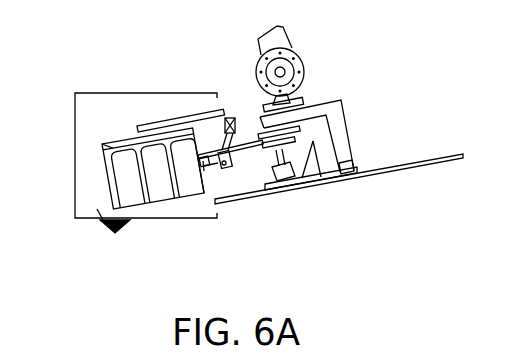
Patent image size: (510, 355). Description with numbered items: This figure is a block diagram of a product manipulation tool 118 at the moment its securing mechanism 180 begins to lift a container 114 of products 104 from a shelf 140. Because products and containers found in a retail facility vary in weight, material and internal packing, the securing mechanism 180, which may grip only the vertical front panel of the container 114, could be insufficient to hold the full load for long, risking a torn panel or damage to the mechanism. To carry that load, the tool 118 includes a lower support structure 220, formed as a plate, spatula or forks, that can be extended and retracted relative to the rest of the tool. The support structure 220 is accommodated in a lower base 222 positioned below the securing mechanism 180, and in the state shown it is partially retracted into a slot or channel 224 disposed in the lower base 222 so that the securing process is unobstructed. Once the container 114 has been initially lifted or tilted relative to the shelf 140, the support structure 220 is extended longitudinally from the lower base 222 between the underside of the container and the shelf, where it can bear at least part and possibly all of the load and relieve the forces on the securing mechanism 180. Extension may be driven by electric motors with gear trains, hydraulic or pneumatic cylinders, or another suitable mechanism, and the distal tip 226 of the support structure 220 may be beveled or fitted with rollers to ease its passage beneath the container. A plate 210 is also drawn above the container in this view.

The products 104 is at (117, 183).
The container 114 is at (158, 207).
The product manipulation tool 118 is at (372, 86).
The shelf 140 is at (197, 221).
The securing mechanism 180 is at (231, 118).
The guide plate 210 is at (128, 139).
The support structure 220 is at (266, 196).
The lower base 222 is at (335, 188).
The slot or channel 224 is at (353, 168).
The distal tip 226 is at (228, 205).